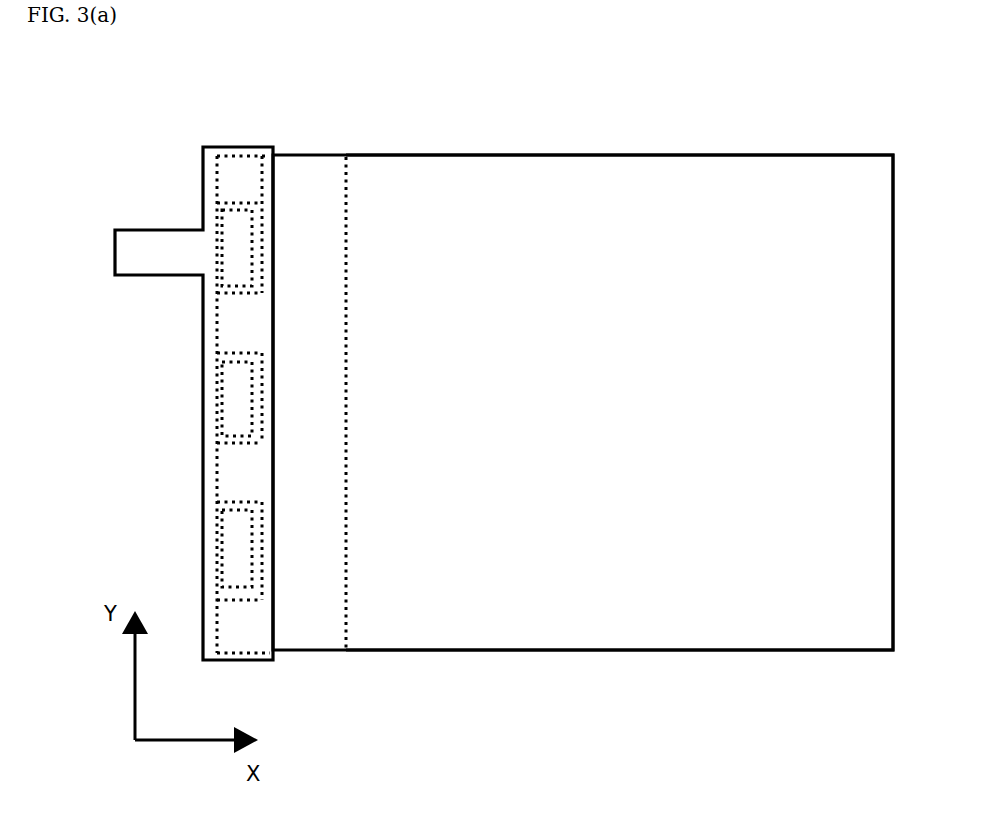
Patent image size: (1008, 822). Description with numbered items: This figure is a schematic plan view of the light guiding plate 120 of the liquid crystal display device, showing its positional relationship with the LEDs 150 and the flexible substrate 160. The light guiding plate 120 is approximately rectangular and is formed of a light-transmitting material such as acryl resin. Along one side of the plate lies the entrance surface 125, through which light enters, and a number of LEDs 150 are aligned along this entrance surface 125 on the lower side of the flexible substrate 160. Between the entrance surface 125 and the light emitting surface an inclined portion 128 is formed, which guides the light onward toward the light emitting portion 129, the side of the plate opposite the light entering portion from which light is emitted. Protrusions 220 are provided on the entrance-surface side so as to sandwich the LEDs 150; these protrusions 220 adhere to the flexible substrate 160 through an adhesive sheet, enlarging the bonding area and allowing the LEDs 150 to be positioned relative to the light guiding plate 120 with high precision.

The light guiding plate 120 is at (619, 153).
The light emitting portion 129 is at (485, 203).
The inclined portion 128 is at (329, 165).
The protrusions 220 is at (240, 327).
The flexible substrate 160 is at (233, 170).
The entrance surface 125 is at (262, 372).
The LEDs 150 is at (238, 414).